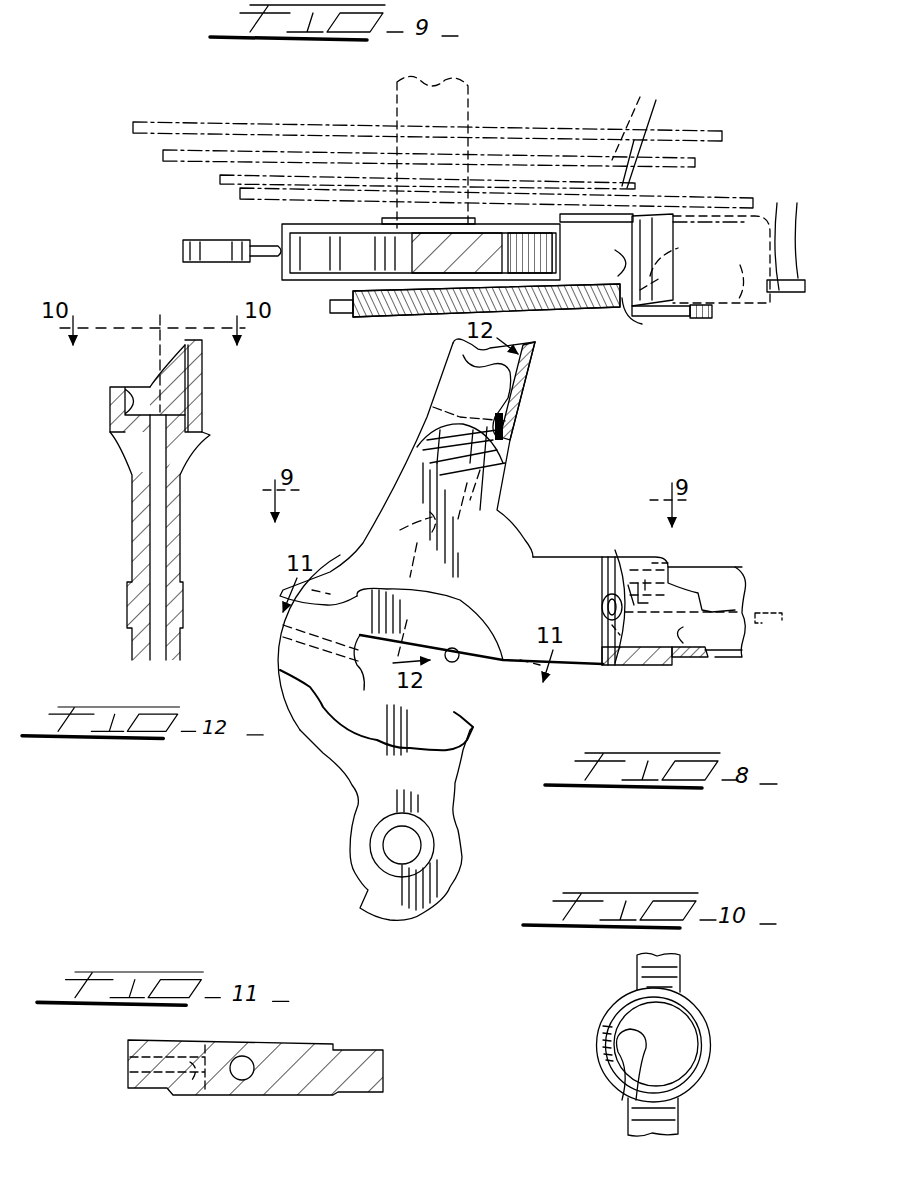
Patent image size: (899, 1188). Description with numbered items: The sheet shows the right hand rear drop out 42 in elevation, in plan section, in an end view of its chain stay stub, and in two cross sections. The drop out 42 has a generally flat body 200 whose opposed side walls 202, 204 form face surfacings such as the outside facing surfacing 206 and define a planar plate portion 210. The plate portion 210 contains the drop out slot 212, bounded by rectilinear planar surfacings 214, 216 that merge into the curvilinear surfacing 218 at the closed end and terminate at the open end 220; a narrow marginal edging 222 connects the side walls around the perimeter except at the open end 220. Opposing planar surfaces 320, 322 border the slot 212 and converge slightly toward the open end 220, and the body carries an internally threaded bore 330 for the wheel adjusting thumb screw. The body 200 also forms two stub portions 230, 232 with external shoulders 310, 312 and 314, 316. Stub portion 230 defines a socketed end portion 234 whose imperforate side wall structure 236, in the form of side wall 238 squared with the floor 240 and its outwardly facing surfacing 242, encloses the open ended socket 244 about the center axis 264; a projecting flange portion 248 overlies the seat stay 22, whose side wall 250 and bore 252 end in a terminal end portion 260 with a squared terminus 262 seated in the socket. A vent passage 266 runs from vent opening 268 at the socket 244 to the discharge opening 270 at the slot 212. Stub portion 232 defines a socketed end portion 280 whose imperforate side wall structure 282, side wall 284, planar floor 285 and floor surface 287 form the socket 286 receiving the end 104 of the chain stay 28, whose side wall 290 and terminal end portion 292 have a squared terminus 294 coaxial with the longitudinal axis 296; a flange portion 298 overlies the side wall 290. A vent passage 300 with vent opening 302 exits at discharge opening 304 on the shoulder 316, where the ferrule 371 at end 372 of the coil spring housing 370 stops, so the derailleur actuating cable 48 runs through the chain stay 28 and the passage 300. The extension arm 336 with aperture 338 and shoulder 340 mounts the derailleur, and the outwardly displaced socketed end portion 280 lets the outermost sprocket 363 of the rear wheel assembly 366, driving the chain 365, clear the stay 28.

In FIG. 8, the seat stay 22 is at (535, 340).
In FIG. 9, the chain stay 28 is at (742, 302).
In FIG. 8, the chain stay 28 is at (740, 575).
In FIG. 8, the drop out 42 is at (310, 805).
In FIG. 9, the derailleur actuating cable 48 is at (796, 212).
In FIG. 8, the rear end of the chain stay 104 is at (705, 565).
In FIG. 12, the body 200 is at (120, 515).
In FIG. 8, the body 200 is at (520, 535).
In FIG. 12, the side wall 202 is at (180, 518).
In FIG. 8, the side wall 202 is at (508, 508).
In FIG. 12, the side wall 204 is at (132, 540).
In FIG. 12, the face surfacing 206 is at (180, 548).
In FIG. 8, the face surfacing 206 is at (520, 555).
In FIG. 8, the plate portion 210 is at (382, 505).
In FIG. 11, the plate portion 210 is at (125, 1078).
In FIG. 8, the drop out slot 212 is at (480, 698).
In FIG. 8, the rectilinear planar surfacing 214 is at (450, 648).
In FIG. 8, the rectilinear planar surfacing 216 is at (472, 732).
In FIG. 8, the curvilinear surfacing 218 is at (364, 695).
In FIG. 8, the open end 220 is at (503, 668).
In FIG. 8, the marginal edging 222 is at (355, 552).
In FIG. 8, the stub portion 230 is at (420, 415).
In FIG. 8, the stub portion 232 is at (672, 646).
In FIG. 8, the socketed end portion 234 is at (445, 395).
In FIG. 12, the side wall structure 236 is at (100, 415).
In FIG. 8, the side wall structure 236 is at (520, 410).
In FIG. 12, the side wall 238 is at (203, 385).
In FIG. 12, the floor 240 is at (175, 360).
In FIG. 12, the outwardly facing surfacing 242 is at (122, 392).
In FIG. 12, the socket 244 is at (148, 372).
In FIG. 12, the projecting flange portion 248 is at (205, 355).
In FIG. 8, the projecting flange portion 248 is at (520, 372).
In FIG. 8, the side wall 250 is at (530, 350).
In FIG. 8, the bore 252 is at (525, 395).
In FIG. 8, the terminal end portion 260 is at (512, 425).
In FIG. 8, the terminus 262 is at (445, 522).
In FIG. 12, the longitudinal center axis 264 is at (150, 320).
In FIG. 12, the vent passage 266 is at (160, 480).
In FIG. 8, the vent passage 266 is at (425, 522).
In FIG. 11, the vent passage 266 is at (245, 1078).
In FIG. 12, the vent opening 268 is at (148, 382).
In FIG. 12, the discharge opening 270 is at (132, 640).
In FIG. 8, the discharge opening 270 is at (370, 605).
In FIG. 8, the socketed end portion 280 is at (680, 550).
In FIG. 10, the socketed end portion 280 is at (605, 1000).
In FIG. 8, the side wall structure 282 is at (640, 668).
In FIG. 8, the side wall 284 is at (672, 600).
In FIG. 10, the side wall 284 is at (690, 1085).
In FIG. 8, the planar floor 285 is at (700, 675).
In FIG. 10, the planar floor 285 is at (700, 1030).
In FIG. 8, the socket 286 is at (735, 652).
In FIG. 10, the socket 286 is at (705, 1052).
In FIG. 10, the planar floor surface 287 is at (672, 1020).
In FIG. 8, the side wall 290 is at (745, 588).
In FIG. 8, the terminal end portion 292 is at (640, 668).
In FIG. 8, the terminus 294 is at (622, 665).
In FIG. 8, the longitudinal axis 296 is at (756, 630).
In FIG. 8, the flange portion 298 is at (685, 636).
In FIG. 9, the vent passage 300 is at (682, 248).
In FIG. 8, the vent passage 300 is at (602, 612).
In FIG. 10, the vent passage 300 is at (628, 1100).
In FIG. 9, the vent opening 302 is at (668, 270).
In FIG. 8, the vent opening 302 is at (618, 630).
In FIG. 10, the vent opening 302 is at (615, 1070).
In FIG. 8, the discharge opening 304 is at (600, 590).
In FIG. 12, the external shoulder 310 is at (122, 443).
In FIG. 12, the external shoulder 312 is at (205, 437).
In FIG. 8, the external shoulder 312 is at (440, 440).
In FIG. 9, the external shoulder 314 is at (600, 215).
In FIG. 9, the external shoulder 316 is at (632, 318).
In FIG. 8, the external shoulder 316 is at (625, 590).
In FIG. 12, the planar surface 320 is at (183, 605).
In FIG. 8, the planar surface 320 is at (427, 740).
In FIG. 11, the planar surface 320 is at (300, 1095).
In FIG. 12, the planar surface 322 is at (127, 605).
In FIG. 11, the planar surface 322 is at (300, 1040).
In FIG. 8, the internally threaded bore 330 is at (283, 632).
In FIG. 11, the internally threaded bore 330 is at (180, 1095).
In FIG. 8, the extension arm 336 is at (443, 802).
In FIG. 8, the aperture 338 is at (415, 857).
In FIG. 8, the shoulder 340 is at (360, 905).
In FIG. 9, the sprockets 363 is at (632, 115).
In FIG. 9, the bicycle chain 365 is at (665, 195).
In FIG. 9, the rear wheel assembly 366 is at (560, 108).
In FIG. 9, the coil spring housing 370 is at (545, 285).
In FIG. 9, the ferrule 371 is at (630, 325).
In FIG. 9, the end of housing 372 is at (622, 250).